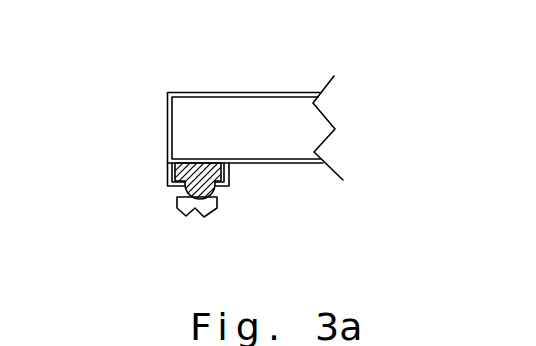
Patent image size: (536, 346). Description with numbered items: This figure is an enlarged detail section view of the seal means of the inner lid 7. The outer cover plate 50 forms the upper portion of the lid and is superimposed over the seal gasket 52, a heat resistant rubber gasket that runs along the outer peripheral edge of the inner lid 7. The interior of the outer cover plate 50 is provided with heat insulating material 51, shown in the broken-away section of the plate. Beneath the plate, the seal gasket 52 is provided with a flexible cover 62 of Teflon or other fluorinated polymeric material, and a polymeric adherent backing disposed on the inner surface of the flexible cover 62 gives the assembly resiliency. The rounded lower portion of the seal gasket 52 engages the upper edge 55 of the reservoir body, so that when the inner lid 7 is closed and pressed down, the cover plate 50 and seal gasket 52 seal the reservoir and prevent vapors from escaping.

The inner lid 7 is at (160, 124).
The outer cover plate 50 is at (262, 92).
The heat insulating material 51 is at (311, 132).
The seal gasket 52 is at (172, 168).
The flexible cover 62 is at (173, 187).
The upper edge 55 is at (201, 207).